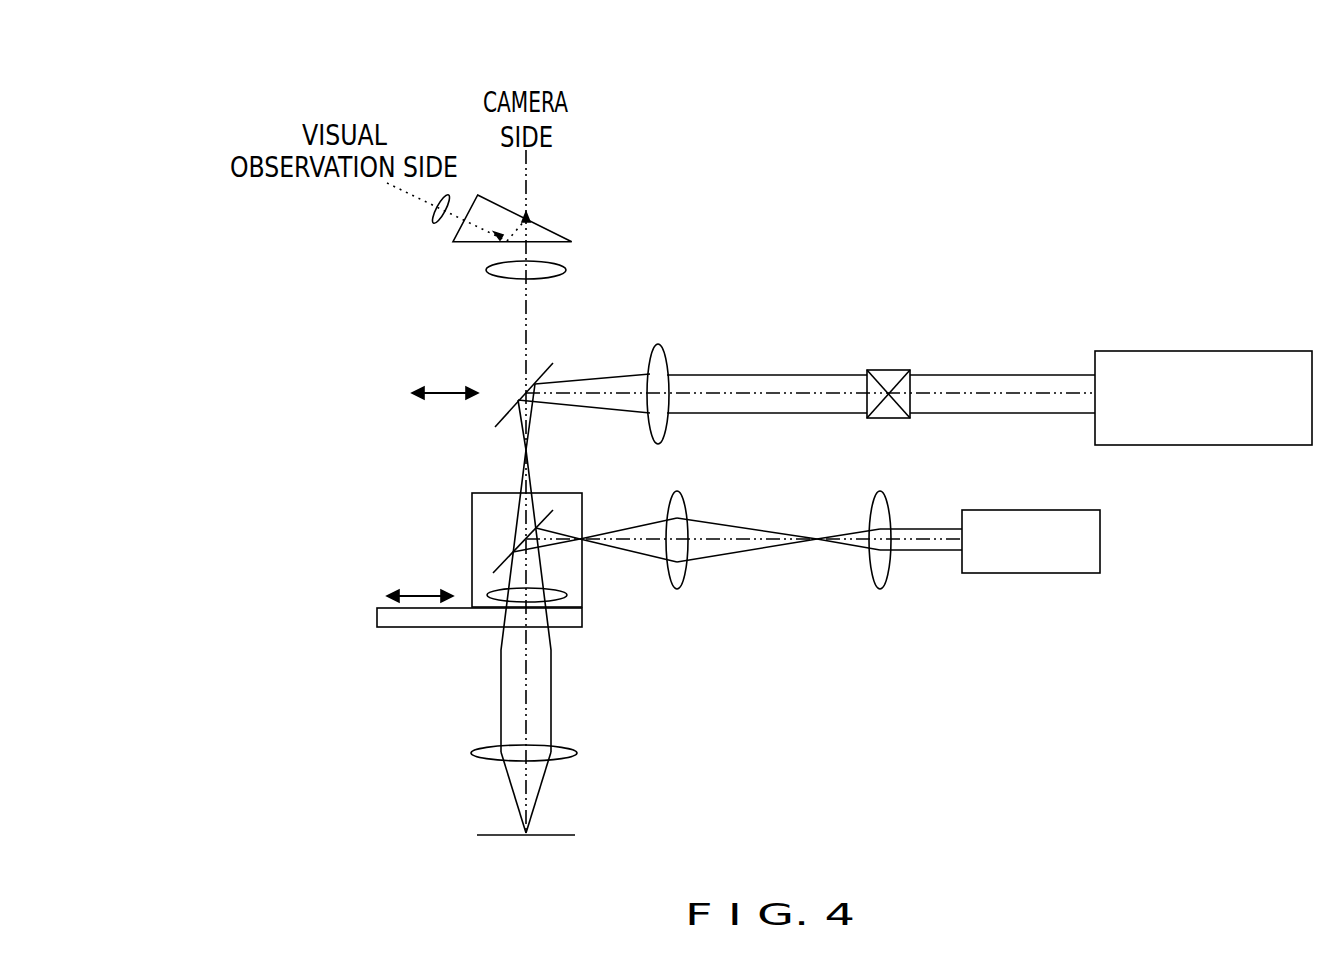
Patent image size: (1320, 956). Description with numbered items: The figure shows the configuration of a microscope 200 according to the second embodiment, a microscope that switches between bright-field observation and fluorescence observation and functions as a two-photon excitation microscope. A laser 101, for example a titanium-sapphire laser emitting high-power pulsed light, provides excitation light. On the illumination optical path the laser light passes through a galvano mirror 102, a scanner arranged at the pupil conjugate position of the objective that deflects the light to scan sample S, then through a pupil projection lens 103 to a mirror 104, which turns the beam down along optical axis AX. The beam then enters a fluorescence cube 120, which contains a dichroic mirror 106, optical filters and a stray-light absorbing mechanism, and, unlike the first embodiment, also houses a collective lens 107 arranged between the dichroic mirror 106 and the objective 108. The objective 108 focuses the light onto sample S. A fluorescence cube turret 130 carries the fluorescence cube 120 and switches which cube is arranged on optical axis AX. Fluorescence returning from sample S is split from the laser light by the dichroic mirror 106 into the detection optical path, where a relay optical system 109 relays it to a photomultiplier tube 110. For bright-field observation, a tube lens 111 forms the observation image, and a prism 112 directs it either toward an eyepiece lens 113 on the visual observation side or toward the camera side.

The microscope 200 is at (1308, 62).
The laser 101 is at (1170, 351).
The galvano mirror 102 is at (887, 370).
The pupil projection lens 103 is at (658, 347).
The mirror 104 is at (495, 427).
The dichroic mirror 106 is at (503, 561).
The collective lens 107 is at (487, 597).
The objective 108 is at (485, 747).
The relay optical system 109 is at (945, 493).
The photomultiplier tube 110 is at (993, 510).
The tube lens 111 is at (567, 270).
The prism 112 is at (547, 227).
The eyepiece lens 113 is at (433, 221).
The fluorescence cube 120 is at (480, 490).
The fluorescence cube turret 130 is at (377, 612).
The sample S is at (485, 833).
The optical axis AX is at (527, 708).